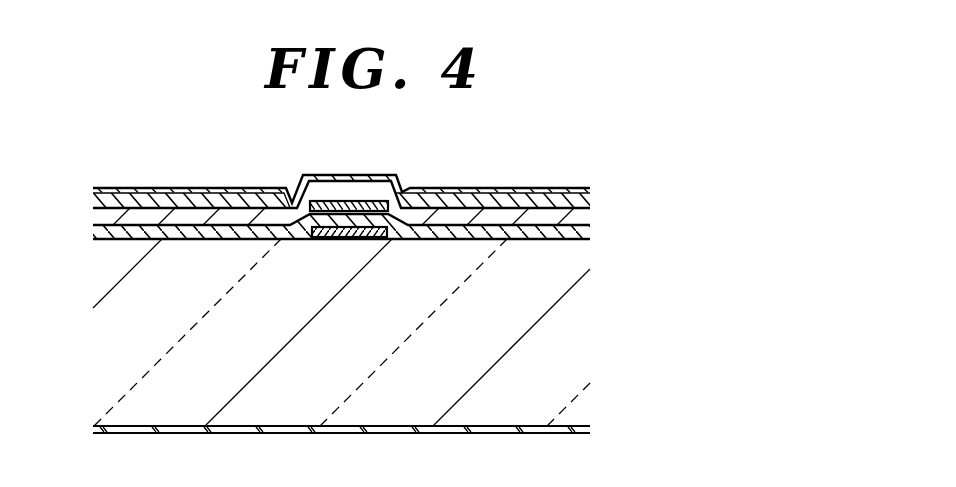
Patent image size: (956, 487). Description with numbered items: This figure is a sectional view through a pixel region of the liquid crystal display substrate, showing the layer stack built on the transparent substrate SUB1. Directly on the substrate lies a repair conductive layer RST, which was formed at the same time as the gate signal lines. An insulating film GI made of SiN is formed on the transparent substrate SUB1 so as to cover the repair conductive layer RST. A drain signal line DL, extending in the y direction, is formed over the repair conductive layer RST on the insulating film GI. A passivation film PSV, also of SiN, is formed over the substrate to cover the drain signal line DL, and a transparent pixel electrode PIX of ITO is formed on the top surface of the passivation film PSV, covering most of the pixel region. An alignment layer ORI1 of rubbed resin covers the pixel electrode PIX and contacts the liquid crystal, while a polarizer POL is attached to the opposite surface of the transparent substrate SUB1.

The drain signal line DL is at (358, 201).
The alignment layer ORI1 is at (592, 191).
The transparent pixel electrode PIX is at (585, 203).
The passivation film PSV is at (585, 220).
The insulating film GI is at (585, 230).
The transparent substrate SUB1 is at (573, 326).
The polarizer POL is at (590, 429).
The repair conductive layer RST is at (333, 237).